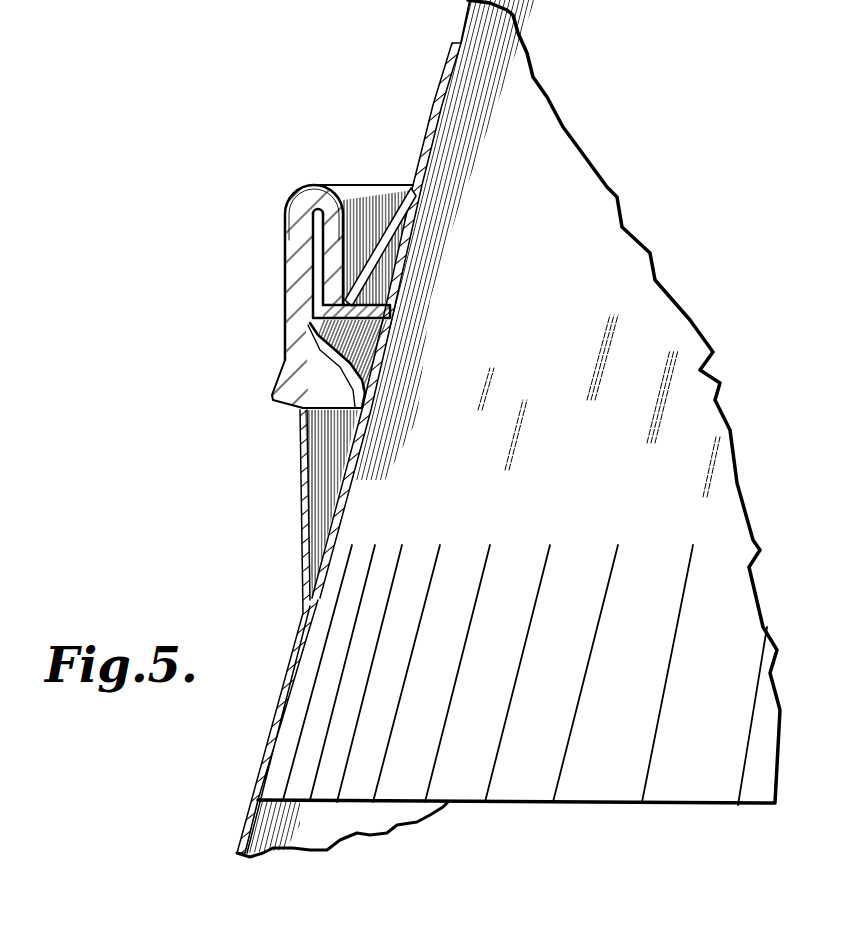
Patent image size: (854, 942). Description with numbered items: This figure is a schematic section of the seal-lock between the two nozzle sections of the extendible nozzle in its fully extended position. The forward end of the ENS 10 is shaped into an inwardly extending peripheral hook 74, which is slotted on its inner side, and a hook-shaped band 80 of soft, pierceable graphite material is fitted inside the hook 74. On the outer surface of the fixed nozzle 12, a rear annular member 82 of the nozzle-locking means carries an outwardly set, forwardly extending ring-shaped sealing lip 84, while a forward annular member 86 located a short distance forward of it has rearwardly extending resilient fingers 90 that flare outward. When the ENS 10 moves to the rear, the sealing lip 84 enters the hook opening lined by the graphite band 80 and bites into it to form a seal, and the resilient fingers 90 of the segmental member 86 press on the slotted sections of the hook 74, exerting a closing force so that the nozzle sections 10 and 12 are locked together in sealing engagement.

The ENS 10 is at (243, 822).
The fixed nozzle 12 is at (518, 33).
The peripheral hook 74 is at (329, 494).
The hook-shaped band 80 is at (295, 289).
The rear annular member 82 is at (360, 349).
The sealing lip 84 is at (290, 212).
The forward annular member 86 is at (422, 103).
The resilient fingers 90 is at (386, 258).